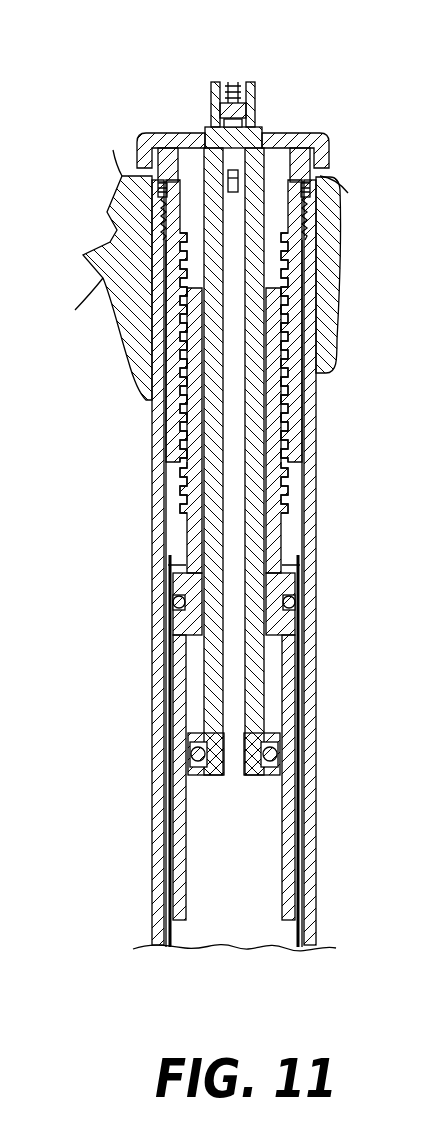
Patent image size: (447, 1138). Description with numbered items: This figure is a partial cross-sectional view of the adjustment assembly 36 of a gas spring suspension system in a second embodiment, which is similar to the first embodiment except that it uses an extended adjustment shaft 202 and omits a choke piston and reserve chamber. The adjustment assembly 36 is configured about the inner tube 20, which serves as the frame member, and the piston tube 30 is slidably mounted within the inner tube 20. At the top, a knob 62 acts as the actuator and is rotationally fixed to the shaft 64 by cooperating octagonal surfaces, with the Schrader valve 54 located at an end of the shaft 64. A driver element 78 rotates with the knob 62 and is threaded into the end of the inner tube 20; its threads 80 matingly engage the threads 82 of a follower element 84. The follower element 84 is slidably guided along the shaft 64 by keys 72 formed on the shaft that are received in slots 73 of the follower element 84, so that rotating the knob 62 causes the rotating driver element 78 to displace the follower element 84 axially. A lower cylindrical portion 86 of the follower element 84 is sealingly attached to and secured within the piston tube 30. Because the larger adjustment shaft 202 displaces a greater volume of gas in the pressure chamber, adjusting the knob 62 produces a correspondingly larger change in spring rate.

The inner tube 20 is at (317, 493).
The piston tube 30 is at (170, 677).
The adjustment assembly 36 is at (88, 401).
The Schrader valve 54 is at (230, 84).
The knob 62 is at (300, 132).
The shaft 64 is at (307, 188).
The keys 72 is at (258, 382).
The slots 73 is at (268, 450).
The driver element 78 is at (294, 222).
The threads 80 is at (289, 279).
The threads 82 is at (289, 320).
The follower element 84 is at (274, 550).
The cylindrical portion 86 is at (276, 583).
The extended adjustment shaft 202 is at (274, 735).